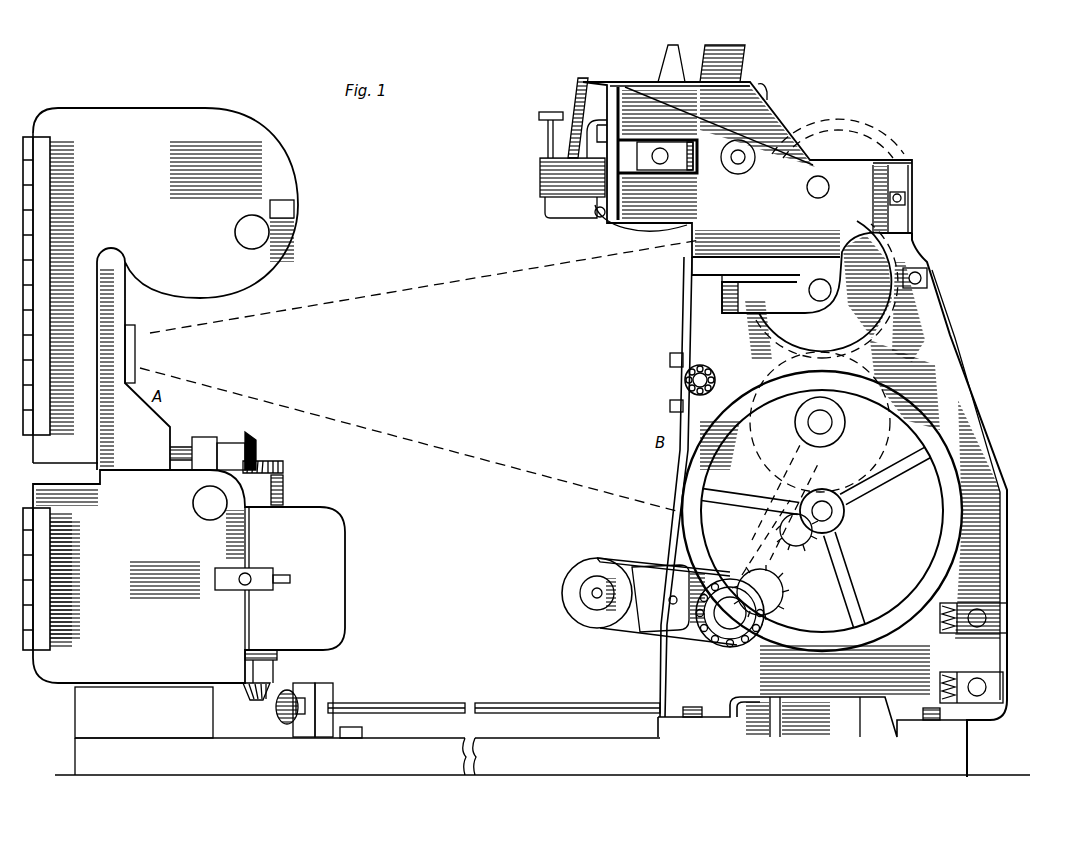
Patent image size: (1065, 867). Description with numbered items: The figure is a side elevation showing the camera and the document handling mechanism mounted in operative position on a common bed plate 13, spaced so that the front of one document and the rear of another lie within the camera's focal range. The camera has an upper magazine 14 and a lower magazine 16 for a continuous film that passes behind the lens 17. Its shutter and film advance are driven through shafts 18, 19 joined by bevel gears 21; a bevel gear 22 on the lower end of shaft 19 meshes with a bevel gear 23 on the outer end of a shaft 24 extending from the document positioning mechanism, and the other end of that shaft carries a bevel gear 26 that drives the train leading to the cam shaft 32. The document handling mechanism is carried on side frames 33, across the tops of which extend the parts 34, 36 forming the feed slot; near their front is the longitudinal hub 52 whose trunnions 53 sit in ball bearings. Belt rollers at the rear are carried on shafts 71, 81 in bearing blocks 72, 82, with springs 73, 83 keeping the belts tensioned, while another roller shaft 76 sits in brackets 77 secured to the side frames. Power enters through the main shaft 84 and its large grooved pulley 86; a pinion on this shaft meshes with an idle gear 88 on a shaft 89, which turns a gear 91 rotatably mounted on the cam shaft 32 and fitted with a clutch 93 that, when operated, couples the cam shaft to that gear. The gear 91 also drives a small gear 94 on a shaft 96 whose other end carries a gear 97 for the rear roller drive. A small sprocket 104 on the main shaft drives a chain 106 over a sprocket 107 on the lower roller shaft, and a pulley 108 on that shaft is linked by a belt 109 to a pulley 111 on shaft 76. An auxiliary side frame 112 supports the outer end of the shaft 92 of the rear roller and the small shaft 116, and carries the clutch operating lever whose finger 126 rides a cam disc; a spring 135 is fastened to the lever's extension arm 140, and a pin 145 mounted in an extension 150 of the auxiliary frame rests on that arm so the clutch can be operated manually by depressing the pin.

The bed plate 13 is at (566, 760).
The upper magazine 14 is at (286, 178).
The lower magazine 16 is at (189, 576).
The lens 17 is at (140, 333).
The shaft 18 is at (182, 445).
The shaft 19 is at (285, 480).
The bevel gears 21 is at (258, 458).
The bevel gear 22 is at (258, 700).
The bevel gear 23 is at (290, 690).
The shaft 24 is at (410, 704).
The bevel gear 26 is at (815, 718).
The cam shaft 32 is at (808, 292).
The side frames 33 is at (944, 326).
The feed slot part 34 is at (736, 62).
The feed slot part 36 is at (664, 58).
The longitudinal hub 52 is at (710, 381).
The trunnions 53 is at (712, 372).
The shaft 71 is at (984, 614).
The bearing blocks 72 is at (1003, 625).
The springs 73 is at (948, 633).
The shaft 76 is at (594, 590).
The brackets 77 is at (640, 602).
The shaft 81 is at (978, 696).
The bearing blocks 82 is at (1003, 687).
The springs 83 is at (942, 690).
The main shaft 84 is at (832, 510).
The large grooved pulley 86 is at (960, 517).
The idle gear 88 is at (760, 452).
The shaft 89 is at (812, 432).
The gear 91 is at (760, 322).
The shaft 92 is at (744, 162).
The clutch 93 is at (868, 330).
The small gear 94 is at (840, 156).
The shaft 96 is at (821, 193).
The gear 97 is at (826, 128).
The small sprocket 104 is at (780, 534).
The chain 106 is at (778, 603).
The sprocket 107 is at (762, 588).
The pulley 108 is at (732, 645).
The belt 109 is at (642, 634).
The pulley 111 is at (583, 616).
The auxiliary side frame 112 is at (694, 252).
The small shaft 116 is at (664, 160).
The finger 126 is at (590, 150).
The spring 135 is at (548, 121).
The extension arm 140 is at (563, 212).
The pin 145 is at (587, 138).
The extension 150 is at (552, 182).